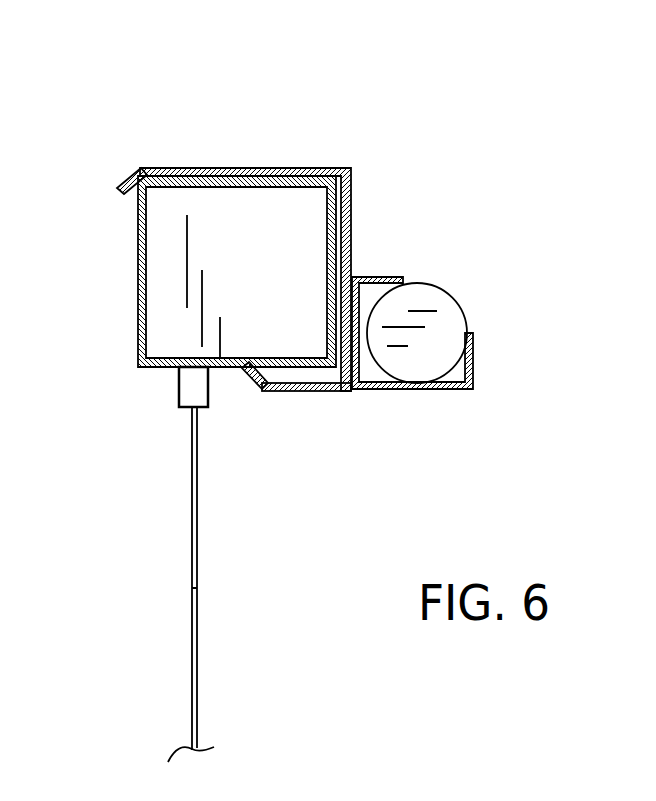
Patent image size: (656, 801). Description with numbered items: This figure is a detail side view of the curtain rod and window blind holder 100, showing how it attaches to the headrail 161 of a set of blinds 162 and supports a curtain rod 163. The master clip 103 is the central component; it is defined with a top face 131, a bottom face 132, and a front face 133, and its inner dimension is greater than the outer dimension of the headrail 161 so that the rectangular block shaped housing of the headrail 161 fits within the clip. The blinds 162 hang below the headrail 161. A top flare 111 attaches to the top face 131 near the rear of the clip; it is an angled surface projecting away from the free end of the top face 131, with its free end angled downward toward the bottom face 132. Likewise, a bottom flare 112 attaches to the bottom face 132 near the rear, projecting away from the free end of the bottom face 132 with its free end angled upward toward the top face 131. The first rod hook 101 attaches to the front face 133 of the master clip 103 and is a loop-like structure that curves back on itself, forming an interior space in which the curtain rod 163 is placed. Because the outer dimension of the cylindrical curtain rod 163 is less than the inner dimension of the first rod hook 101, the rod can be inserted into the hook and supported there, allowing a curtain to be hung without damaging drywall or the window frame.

The curtain rod and window blind holder 100 is at (135, 74).
The first rod hook 101 is at (415, 390).
The master clip 103 is at (280, 168).
The top flare 111 is at (126, 178).
The bottom flare 112 is at (248, 392).
The top face 131 is at (228, 168).
The bottom face 132 is at (320, 392).
The front face 133 is at (352, 224).
The headrail 161 is at (160, 277).
The blinds 162 is at (200, 547).
The curtain rod 163 is at (455, 298).